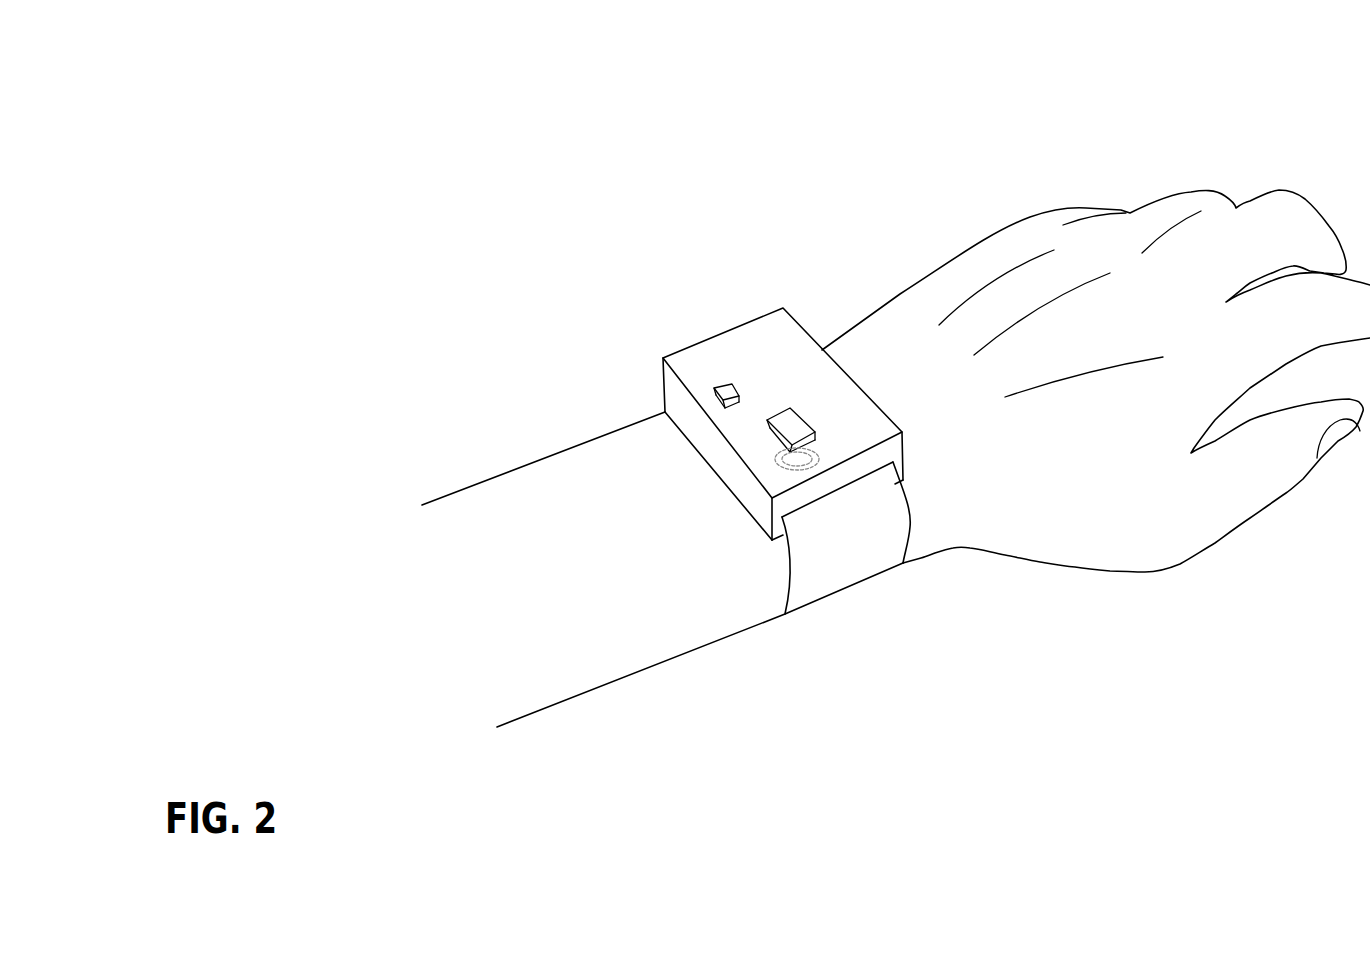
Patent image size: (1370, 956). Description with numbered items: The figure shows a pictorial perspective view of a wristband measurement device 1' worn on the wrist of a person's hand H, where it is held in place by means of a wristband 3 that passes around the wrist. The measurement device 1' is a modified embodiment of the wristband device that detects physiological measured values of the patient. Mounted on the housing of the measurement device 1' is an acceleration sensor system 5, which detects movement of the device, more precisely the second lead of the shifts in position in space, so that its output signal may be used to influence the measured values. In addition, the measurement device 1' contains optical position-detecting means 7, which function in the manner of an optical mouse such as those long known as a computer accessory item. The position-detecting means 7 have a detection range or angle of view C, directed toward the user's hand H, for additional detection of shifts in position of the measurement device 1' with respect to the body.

The wristband measurement device 1' is at (713, 404).
The wristband 3 is at (855, 572).
The acceleration sensor system 5 is at (730, 384).
The optical position-detecting means 7 is at (790, 408).
The hand H is at (968, 269).
The detection range C is at (795, 465).